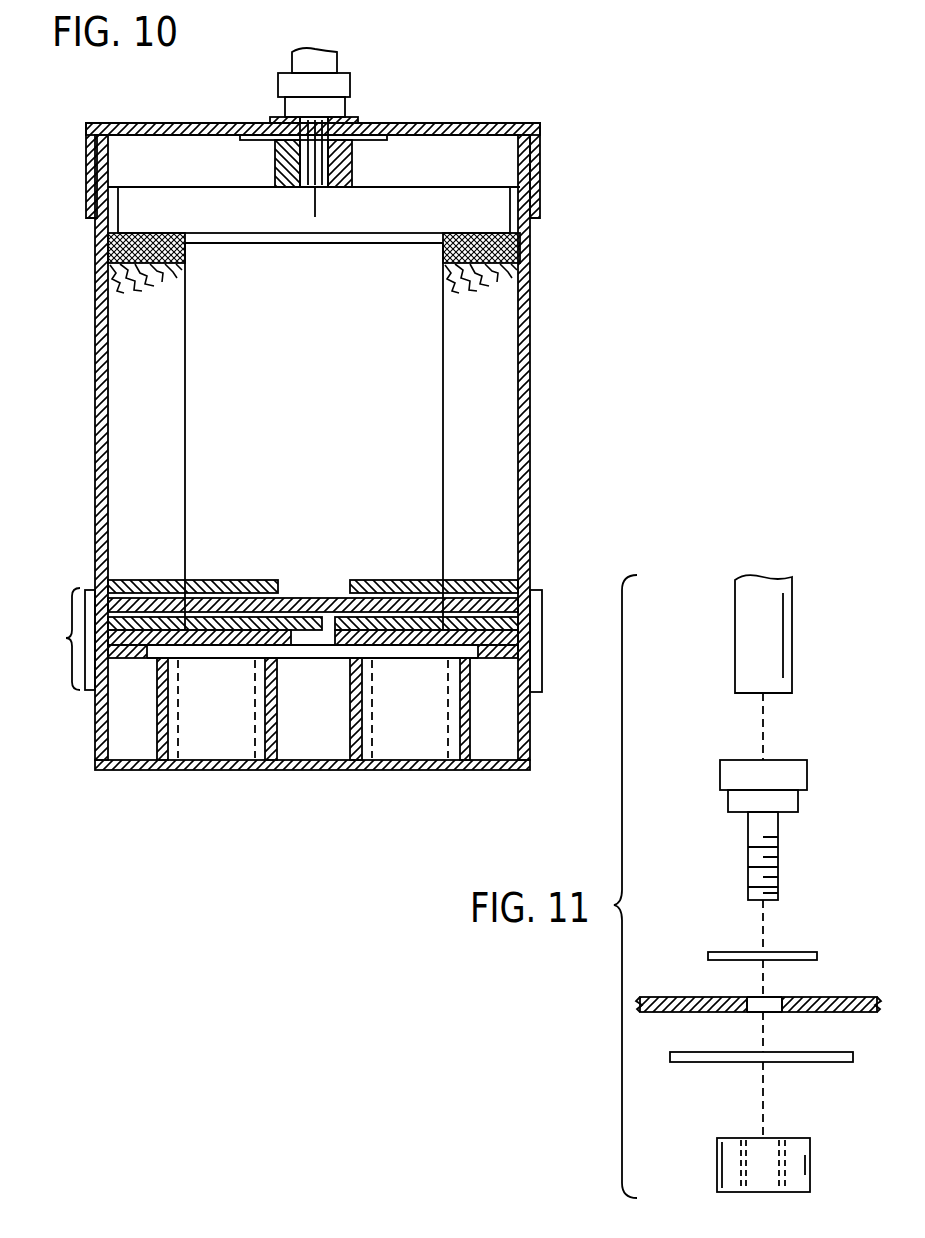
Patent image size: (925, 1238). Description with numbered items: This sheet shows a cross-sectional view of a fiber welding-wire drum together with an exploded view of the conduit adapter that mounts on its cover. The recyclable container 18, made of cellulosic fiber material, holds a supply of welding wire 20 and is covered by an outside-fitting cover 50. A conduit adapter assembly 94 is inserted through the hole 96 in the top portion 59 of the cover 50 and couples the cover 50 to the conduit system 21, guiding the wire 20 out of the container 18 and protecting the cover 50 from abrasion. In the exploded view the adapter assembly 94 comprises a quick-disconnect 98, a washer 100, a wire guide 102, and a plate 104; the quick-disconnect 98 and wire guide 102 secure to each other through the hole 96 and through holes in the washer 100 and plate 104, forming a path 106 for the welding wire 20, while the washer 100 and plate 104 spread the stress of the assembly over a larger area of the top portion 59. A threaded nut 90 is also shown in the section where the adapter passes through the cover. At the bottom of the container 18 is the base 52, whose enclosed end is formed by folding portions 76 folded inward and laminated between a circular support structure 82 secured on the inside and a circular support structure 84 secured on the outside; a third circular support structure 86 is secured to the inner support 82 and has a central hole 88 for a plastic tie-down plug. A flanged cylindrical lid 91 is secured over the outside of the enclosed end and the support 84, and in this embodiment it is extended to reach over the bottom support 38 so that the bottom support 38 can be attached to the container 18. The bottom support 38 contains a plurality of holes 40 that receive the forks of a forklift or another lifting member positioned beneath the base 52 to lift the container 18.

In FIG. 10, the recyclable container 18 is at (612, 180).
In FIG. 10, the welding wire 20 is at (316, 197).
In FIG. 10, the conduit system 21 is at (320, 63).
In FIG. 11, the conduit system 21 is at (778, 613).
In FIG. 10, the bottom support 38 is at (170, 772).
In FIG. 10, the holes 40 is at (230, 713).
In FIG. 10, the outside-fitting cover 50 is at (331, 148).
In FIG. 10, the base 52 is at (312, 627).
In FIG. 10, the top portion 59 is at (175, 122).
In FIG. 11, the top portion 59 is at (825, 1003).
In FIG. 10, the folding portions 76 is at (175, 617).
In FIG. 10, the circular support structure 82 is at (508, 597).
In FIG. 10, the circular support structure 84 is at (488, 660).
In FIG. 10, the third circular support structure 86 is at (418, 580).
In FIG. 10, the hole 88 is at (317, 597).
In FIG. 10, the nut 90 is at (345, 168).
In FIG. 10, the cylindrical lid 91 is at (545, 645).
In FIG. 10, the conduit adapter assembly 94 is at (347, 83).
In FIG. 10, the hole 96 is at (360, 131).
In FIG. 11, the hole 96 is at (755, 1005).
In FIG. 11, the quick-disconnect 98 is at (800, 770).
In FIG. 11, the washer 100 is at (800, 953).
In FIG. 11, the wire guide 102 is at (790, 1145).
In FIG. 11, the plate 104 is at (810, 1052).
In FIG. 10, the path 106 is at (330, 150).